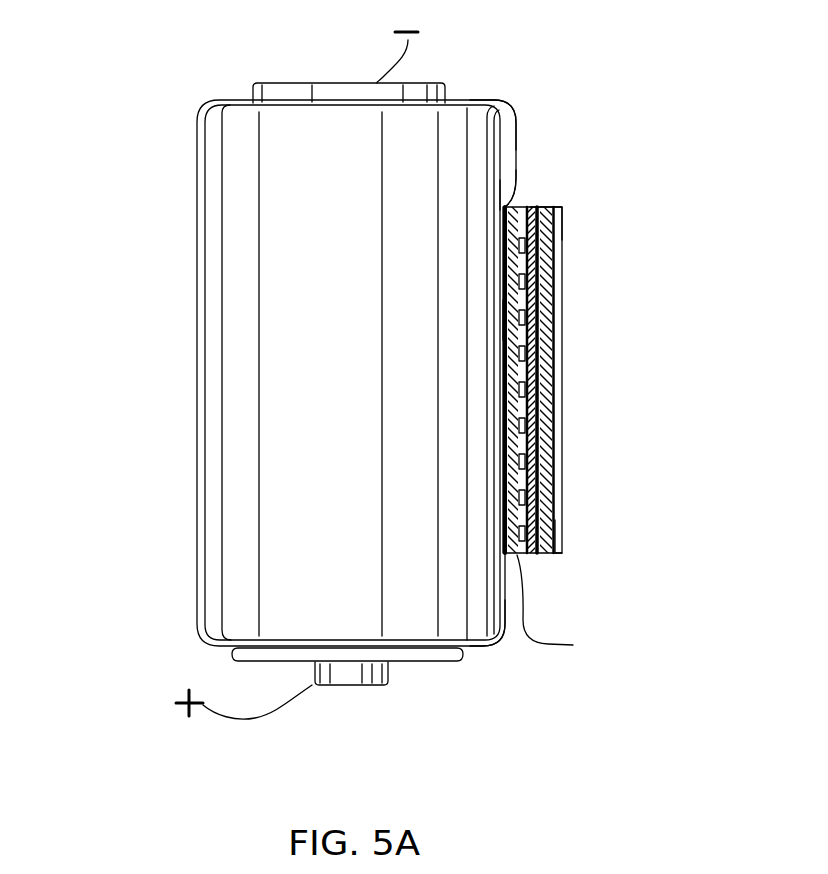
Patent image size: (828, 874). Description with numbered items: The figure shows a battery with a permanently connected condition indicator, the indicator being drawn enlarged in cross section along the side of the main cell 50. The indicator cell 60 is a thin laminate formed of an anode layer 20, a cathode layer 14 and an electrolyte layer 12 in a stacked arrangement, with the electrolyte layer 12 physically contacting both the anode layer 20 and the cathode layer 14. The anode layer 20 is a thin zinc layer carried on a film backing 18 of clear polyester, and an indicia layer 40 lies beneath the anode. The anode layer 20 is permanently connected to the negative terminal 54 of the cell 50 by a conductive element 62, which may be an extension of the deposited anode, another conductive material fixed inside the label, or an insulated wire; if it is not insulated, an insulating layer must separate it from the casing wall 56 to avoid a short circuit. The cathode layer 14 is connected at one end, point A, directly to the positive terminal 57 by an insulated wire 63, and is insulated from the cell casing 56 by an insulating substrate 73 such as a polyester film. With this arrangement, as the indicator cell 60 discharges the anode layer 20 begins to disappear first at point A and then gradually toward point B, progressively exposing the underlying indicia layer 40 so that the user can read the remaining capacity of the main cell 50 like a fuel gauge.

The cell 50 is at (192, 451).
The negative terminal 54 is at (312, 83).
The positive terminal 57 is at (388, 686).
The conductive element 62 is at (482, 99).
The wire 63 is at (505, 648).
The cathode layer 14 is at (520, 184).
The casing wall 56 is at (503, 193).
The insulating substrate 73 is at (503, 320).
The indicator cell 60 is at (597, 419).
The electrolyte layer 12 is at (534, 556).
The anode layer 20 is at (546, 557).
The film backing 18 is at (561, 520).
The indicia layer 40 is at (561, 610).
The point A is at (562, 545).
The point B is at (542, 207).